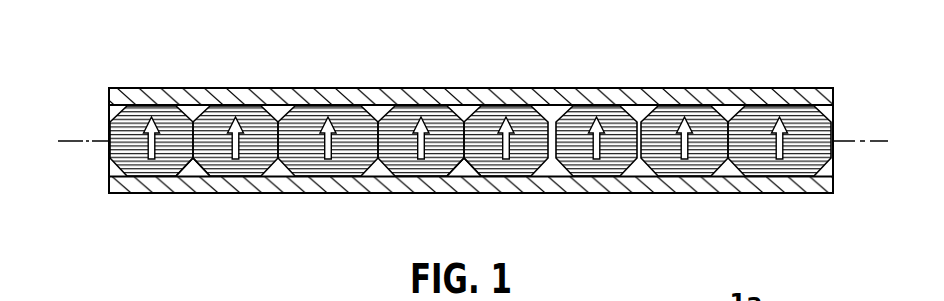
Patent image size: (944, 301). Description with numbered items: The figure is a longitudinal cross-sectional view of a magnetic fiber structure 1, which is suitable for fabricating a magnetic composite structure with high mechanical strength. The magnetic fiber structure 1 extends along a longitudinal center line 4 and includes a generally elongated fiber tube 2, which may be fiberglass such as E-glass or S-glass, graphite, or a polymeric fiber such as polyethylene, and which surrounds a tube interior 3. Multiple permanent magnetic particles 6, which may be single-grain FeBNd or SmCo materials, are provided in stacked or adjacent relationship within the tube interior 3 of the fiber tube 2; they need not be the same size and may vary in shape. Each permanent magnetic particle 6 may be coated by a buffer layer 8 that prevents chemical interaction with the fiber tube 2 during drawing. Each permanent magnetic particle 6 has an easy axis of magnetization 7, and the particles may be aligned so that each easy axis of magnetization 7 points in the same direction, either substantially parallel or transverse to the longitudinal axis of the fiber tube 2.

The magnetic fiber structure 1 is at (469, 134).
The fiber tube 2 is at (320, 194).
The tube interior 3 is at (118, 177).
The longitudinal center line 4 is at (83, 141).
The permanent magnetic particles 6 is at (172, 157).
The easy axis of magnetization 7 is at (422, 146).
The buffer layer 8 is at (458, 162).